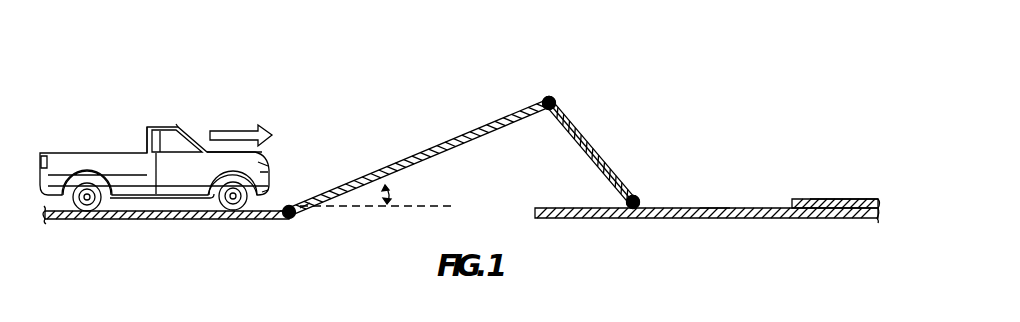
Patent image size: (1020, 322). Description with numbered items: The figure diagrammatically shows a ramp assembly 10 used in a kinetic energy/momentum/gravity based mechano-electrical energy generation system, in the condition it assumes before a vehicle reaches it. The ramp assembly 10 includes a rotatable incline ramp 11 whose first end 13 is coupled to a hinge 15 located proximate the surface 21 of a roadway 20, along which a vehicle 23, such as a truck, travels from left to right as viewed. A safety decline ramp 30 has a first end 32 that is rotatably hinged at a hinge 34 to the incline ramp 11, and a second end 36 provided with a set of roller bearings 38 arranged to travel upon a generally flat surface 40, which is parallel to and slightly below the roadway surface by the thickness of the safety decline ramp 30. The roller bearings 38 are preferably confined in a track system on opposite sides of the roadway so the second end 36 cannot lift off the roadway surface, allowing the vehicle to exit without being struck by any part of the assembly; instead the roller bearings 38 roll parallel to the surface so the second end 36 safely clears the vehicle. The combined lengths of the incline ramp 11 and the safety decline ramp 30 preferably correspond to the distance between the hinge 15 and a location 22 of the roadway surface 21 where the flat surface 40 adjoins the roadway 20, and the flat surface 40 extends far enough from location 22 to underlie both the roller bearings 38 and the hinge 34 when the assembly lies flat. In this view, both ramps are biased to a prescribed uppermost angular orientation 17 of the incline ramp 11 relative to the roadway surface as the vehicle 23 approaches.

The ramp assembly 10 is at (562, 56).
The rotatable incline ramp 11 is at (416, 152).
The first end 13 is at (298, 208).
The hinge 15 is at (289, 219).
The uppermost angular orientation 17 is at (392, 193).
The roadway 20 is at (183, 220).
The roadway surface 21 is at (287, 206).
The location 22 is at (792, 200).
The vehicle 23 is at (174, 127).
The safety decline ramp 30 is at (587, 137).
The first end 32 is at (552, 100).
The hinge 34 is at (546, 100).
The second end 36 is at (634, 197).
The roller bearings 38 is at (640, 204).
The generally flat surface 40 is at (713, 208).